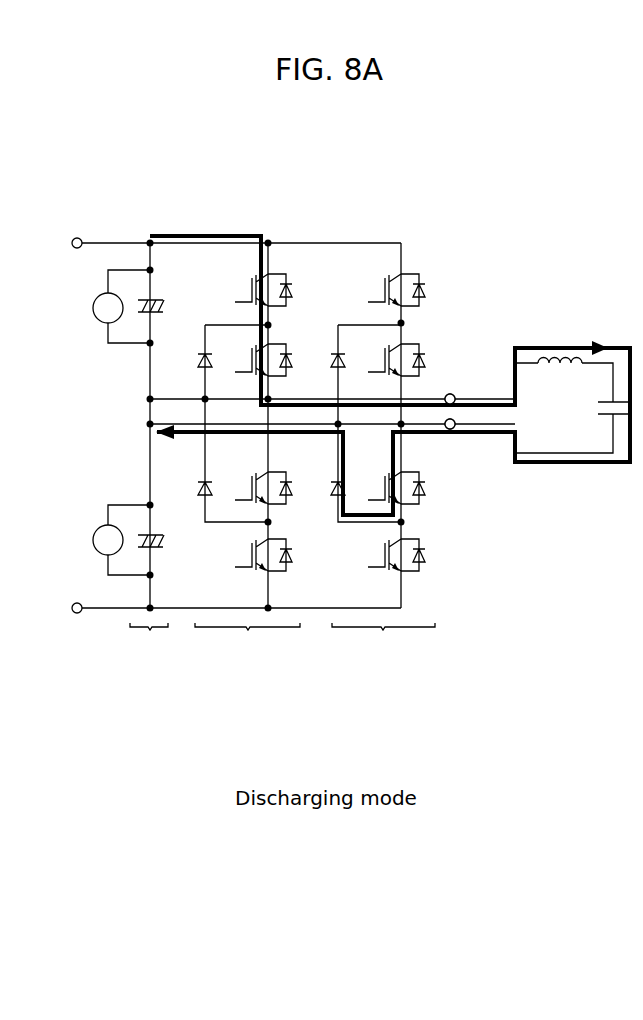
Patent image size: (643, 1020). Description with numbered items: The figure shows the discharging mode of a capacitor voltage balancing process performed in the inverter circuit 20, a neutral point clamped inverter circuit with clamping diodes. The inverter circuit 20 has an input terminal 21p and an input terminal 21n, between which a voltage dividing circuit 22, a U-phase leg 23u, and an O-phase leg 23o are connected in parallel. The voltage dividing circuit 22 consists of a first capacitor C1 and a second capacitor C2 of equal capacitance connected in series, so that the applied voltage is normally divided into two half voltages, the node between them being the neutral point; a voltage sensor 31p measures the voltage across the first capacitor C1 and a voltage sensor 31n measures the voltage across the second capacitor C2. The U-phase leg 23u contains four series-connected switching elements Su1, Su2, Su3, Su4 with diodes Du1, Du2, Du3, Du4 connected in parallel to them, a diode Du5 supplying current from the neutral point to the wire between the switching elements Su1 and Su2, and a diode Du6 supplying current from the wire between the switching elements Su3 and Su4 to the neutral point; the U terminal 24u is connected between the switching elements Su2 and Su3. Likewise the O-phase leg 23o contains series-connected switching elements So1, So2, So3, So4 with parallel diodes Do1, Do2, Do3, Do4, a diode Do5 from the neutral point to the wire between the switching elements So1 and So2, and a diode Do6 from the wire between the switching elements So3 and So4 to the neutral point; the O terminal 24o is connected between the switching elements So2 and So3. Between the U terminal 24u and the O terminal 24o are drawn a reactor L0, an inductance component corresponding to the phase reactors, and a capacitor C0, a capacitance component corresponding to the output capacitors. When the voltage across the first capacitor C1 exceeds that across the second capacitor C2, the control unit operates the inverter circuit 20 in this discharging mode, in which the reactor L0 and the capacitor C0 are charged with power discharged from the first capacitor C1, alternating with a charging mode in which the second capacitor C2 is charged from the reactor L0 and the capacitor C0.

The inverter circuit 20 is at (455, 218).
The input terminal 21p is at (78, 238).
The input terminal 21n is at (78, 613).
The voltage dividing circuit 22 is at (149, 642).
The U-phase leg 23u is at (247, 642).
The O-phase leg 23o is at (383, 642).
The U terminal 24u is at (455, 397).
The O terminal 24o is at (455, 427).
The voltage sensor 31p is at (106, 324).
The voltage sensor 31n is at (106, 556).
The first capacitor C1 is at (167, 302).
The second capacitor C2 is at (168, 536).
The switching element Su1 is at (249, 289).
The switching element Su2 is at (249, 361).
The switching element Su3 is at (249, 489).
The switching element Su4 is at (249, 557).
The switching element So1 is at (382, 289).
The switching element So2 is at (382, 361).
The switching element So3 is at (382, 489).
The switching element So4 is at (382, 557).
The diode Du1 is at (292, 291).
The diode Du2 is at (292, 361).
The diode Du3 is at (292, 489).
The diode Du4 is at (292, 557).
The diode Du5 is at (200, 359).
The diode Du6 is at (200, 487).
The diode Do1 is at (425, 291).
The diode Do2 is at (425, 361).
The diode Do3 is at (425, 489).
The diode Do4 is at (425, 557).
The diode Do5 is at (334, 366).
The diode Do6 is at (334, 495).
The reactor L0 is at (548, 366).
The capacitor C0 is at (596, 408).